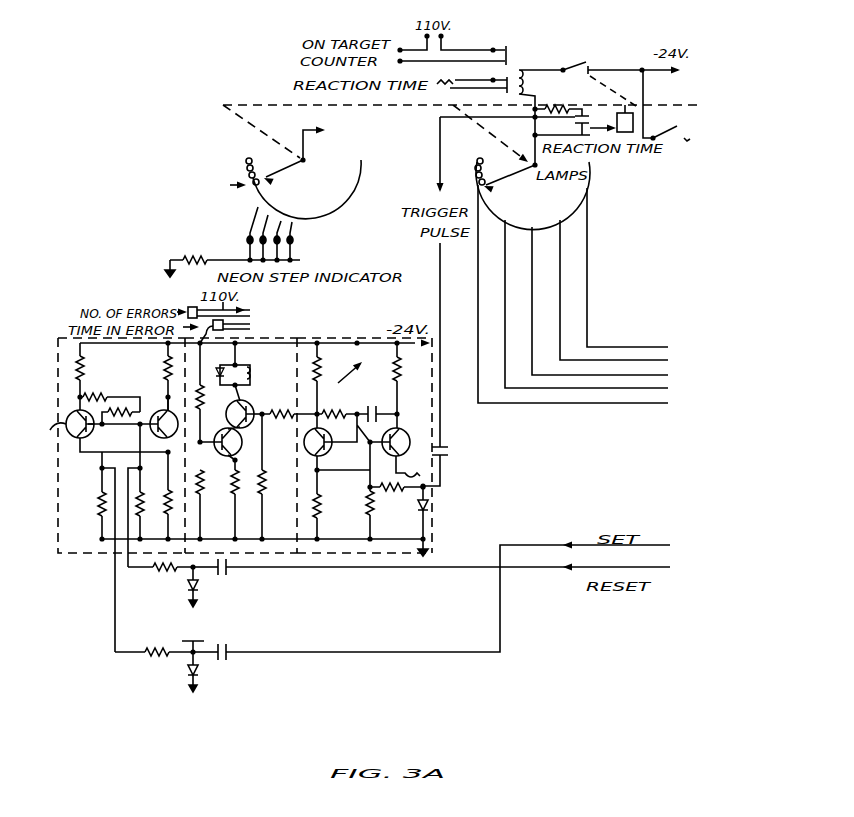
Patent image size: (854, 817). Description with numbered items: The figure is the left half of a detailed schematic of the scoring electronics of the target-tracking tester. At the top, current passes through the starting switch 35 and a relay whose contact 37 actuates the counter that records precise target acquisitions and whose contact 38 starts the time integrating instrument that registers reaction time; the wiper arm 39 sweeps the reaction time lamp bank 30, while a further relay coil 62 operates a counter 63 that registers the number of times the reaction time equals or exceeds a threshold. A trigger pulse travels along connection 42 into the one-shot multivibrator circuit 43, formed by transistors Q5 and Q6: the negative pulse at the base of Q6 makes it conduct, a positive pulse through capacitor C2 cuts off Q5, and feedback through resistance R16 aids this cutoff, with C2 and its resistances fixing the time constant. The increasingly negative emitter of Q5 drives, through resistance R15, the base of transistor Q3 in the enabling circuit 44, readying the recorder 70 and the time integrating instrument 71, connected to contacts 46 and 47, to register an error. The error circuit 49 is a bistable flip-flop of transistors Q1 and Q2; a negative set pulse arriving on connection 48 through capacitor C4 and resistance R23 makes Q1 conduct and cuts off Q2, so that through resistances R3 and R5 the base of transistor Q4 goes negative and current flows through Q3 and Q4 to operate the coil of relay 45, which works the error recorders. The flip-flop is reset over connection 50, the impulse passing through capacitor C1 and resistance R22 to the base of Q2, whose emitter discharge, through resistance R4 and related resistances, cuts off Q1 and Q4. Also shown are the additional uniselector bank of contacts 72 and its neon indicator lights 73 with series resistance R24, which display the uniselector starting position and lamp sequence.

The reaction time lamp bank 30 is at (590, 182).
The starting switch 35 is at (573, 64).
The counter contact 37 is at (504, 47).
The reaction time contact 38 is at (502, 82).
The wiper arm 39 is at (516, 171).
The trigger pulse line 42 is at (440, 244).
The one-shot multivibrator circuit 43 is at (350, 536).
The enabling circuit 44 is at (223, 533).
The relay 45 is at (250, 365).
The contact 46 is at (253, 300).
The contact 47 is at (253, 328).
The connection 48 is at (500, 603).
The error circuit 49 is at (88, 546).
The reset connection 50 is at (517, 572).
The relay coil 62 is at (581, 107).
The counter 63 is at (620, 112).
The recorder 70 is at (189, 305).
The time integrating instrument 71 is at (202, 343).
The uniselector bank of contacts 72 is at (341, 214).
The neon indicator lights 73 is at (303, 243).
The transistor Q1 is at (66, 424).
The transistor Q2 is at (153, 426).
The transistor Q3 is at (251, 407).
The transistor Q4 is at (228, 459).
The transistor Q5 is at (303, 455).
The transistor Q6 is at (400, 429).
The resistance R3 is at (163, 364).
The resistance R4 is at (123, 409).
The resistance R5 is at (168, 396).
The resistance R15 is at (293, 417).
The resistance R16 is at (353, 403).
The resistance R22 is at (165, 568).
The resistance R23 is at (156, 656).
The resistance R24 is at (188, 256).
The capacitor C1 is at (228, 570).
The capacitor C2 is at (380, 405).
The capacitor C4 is at (225, 656).